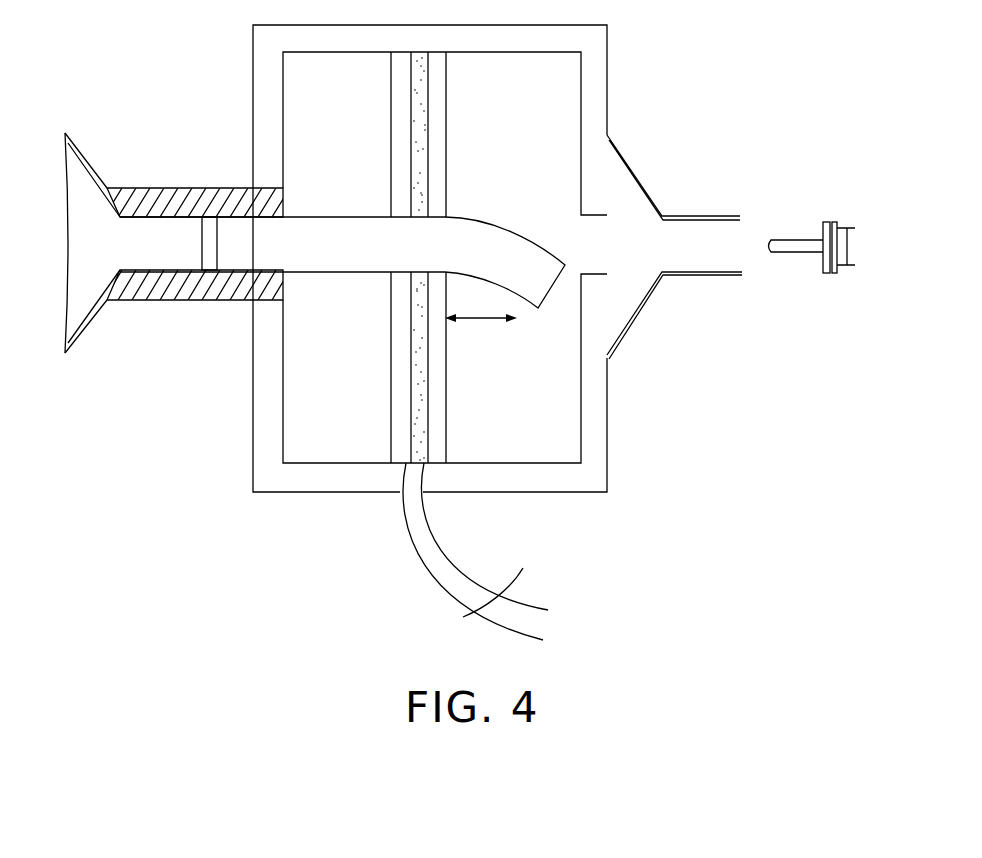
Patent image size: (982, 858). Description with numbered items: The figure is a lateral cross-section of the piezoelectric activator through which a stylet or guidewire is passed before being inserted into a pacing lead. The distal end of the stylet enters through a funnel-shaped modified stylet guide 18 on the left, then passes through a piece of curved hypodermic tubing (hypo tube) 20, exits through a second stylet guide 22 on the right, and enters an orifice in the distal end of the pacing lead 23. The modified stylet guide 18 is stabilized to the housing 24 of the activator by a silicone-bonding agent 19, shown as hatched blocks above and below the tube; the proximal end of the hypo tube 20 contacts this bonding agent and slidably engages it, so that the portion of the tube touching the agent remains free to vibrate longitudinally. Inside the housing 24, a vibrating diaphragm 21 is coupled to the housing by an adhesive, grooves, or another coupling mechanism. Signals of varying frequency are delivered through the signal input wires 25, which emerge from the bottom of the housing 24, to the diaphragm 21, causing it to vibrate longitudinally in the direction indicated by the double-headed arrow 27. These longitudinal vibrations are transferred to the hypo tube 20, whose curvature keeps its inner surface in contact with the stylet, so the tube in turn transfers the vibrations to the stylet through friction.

The modified stylet guide 18 is at (88, 327).
The silicone-bonding agent 19 is at (143, 187).
The curved hypodermic tubing 20 is at (247, 233).
The vibrating diaphragm 21 is at (445, 138).
The second stylet guide 22 is at (650, 195).
The pacing lead 23 is at (845, 225).
The housing 24 is at (610, 437).
The signal input wires 25 is at (447, 562).
The arrow 27 is at (482, 321).